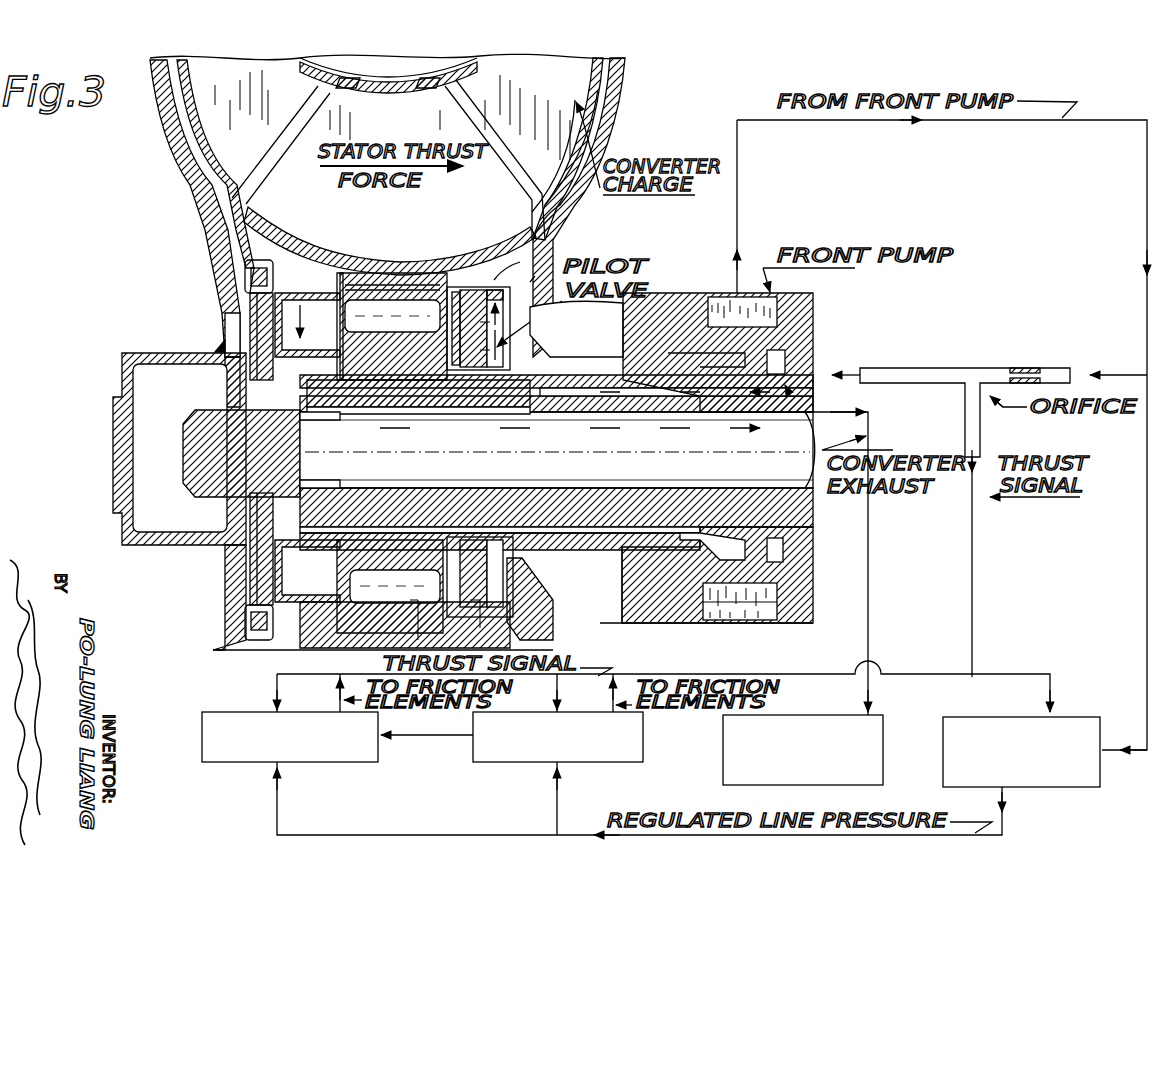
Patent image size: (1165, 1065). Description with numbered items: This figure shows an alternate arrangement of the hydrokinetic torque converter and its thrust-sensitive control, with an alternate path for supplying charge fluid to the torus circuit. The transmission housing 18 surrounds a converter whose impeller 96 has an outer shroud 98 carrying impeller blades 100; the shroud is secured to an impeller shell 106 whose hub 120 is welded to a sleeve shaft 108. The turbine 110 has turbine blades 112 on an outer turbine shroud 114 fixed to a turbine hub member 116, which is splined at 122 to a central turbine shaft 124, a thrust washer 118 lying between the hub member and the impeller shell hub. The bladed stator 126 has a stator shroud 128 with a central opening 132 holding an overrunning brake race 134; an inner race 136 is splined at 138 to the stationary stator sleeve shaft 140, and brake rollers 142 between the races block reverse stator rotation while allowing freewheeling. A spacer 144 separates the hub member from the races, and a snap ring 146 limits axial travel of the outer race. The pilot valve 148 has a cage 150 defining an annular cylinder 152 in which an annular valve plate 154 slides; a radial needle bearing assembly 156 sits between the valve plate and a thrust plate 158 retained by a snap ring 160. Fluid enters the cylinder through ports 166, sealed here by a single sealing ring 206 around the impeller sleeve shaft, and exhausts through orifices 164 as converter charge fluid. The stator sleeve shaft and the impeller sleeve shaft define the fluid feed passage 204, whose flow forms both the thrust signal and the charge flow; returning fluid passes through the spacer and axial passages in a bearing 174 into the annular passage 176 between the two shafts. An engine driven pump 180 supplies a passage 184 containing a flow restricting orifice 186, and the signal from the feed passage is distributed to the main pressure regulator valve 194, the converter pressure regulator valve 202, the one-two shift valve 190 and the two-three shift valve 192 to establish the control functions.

The transmission housing flange 18 is at (125, 376).
The torque converter impeller 96 is at (606, 102).
The outer shroud 98 is at (598, 122).
The impeller blades 100 is at (612, 71).
The impeller shell 106 is at (598, 144).
The sleeve shaft 108 is at (598, 342).
The turbine 110 is at (198, 150).
The turbine blades 112 is at (200, 127).
The outer turbine shroud 114 is at (212, 170).
The turbine hub member 116 is at (242, 272).
The thrust washer 118 is at (232, 322).
The hub of the impeller shell 120 is at (248, 300).
The spline 122 is at (210, 357).
The central turbine shaft 124 is at (572, 512).
The bladed stator 126 is at (388, 102).
The stator shroud 128 is at (388, 288).
The central opening 132 is at (368, 275).
The overrunning brake race 134 is at (415, 310).
The overrunning brake inner race 136 is at (345, 535).
The spline 138 is at (352, 412).
The stator sleeve shaft 140 is at (450, 412).
The overrunning brake rollers 142 is at (350, 287).
The spacer 144 is at (340, 280).
The snap ring 146 is at (305, 250).
The pilot valve 148 is at (494, 264).
The cage 150 is at (530, 612).
The annular cylinder 152 is at (440, 620).
The annular valve ring or plate 154 is at (498, 584).
The radial needle bearing assembly 156 is at (445, 560).
The thrust plate 158 is at (375, 650).
The snap ring 160 is at (470, 290).
The orifices 164 is at (498, 288).
The ports 166 is at (556, 400).
The bearing 174 is at (368, 488).
The annular passage 176 is at (598, 492).
The engine driven positive displacement pump 180 is at (764, 338).
The passage 184 is at (968, 356).
The flow restricting orifice 186 is at (1045, 356).
The one-two shift valve 190 is at (630, 760).
The two-three shift valve 192 is at (353, 760).
The main pressure regulator valve 194 is at (1091, 787).
The converter pressure regulator valve 202 is at (879, 783).
The fluid feed passage 204 is at (614, 416).
The sealing ring 206 is at (448, 398).